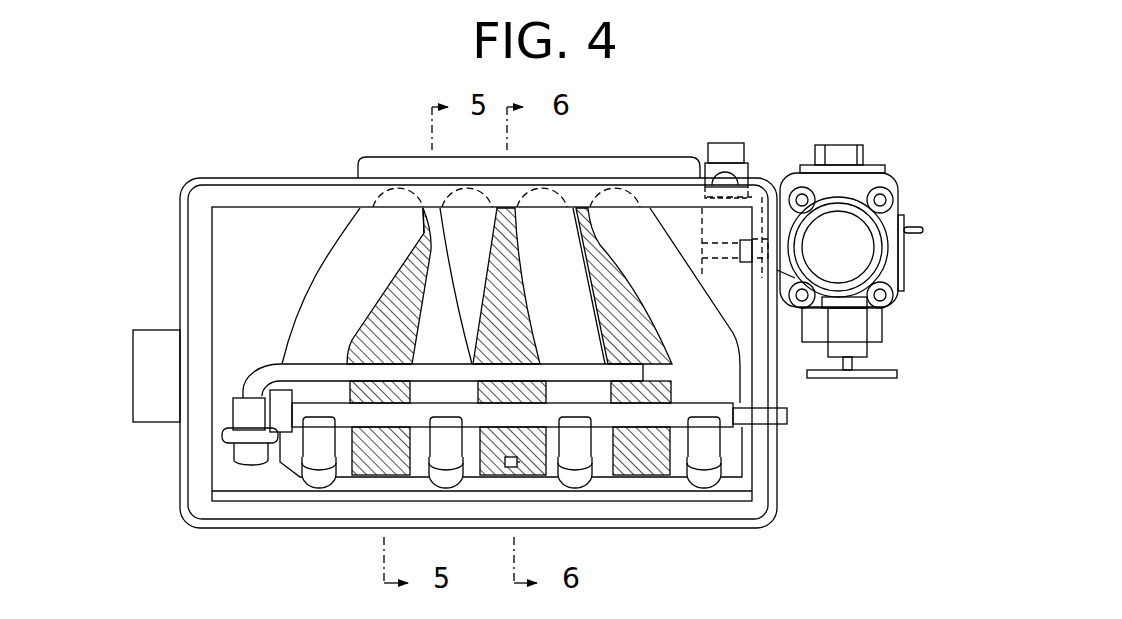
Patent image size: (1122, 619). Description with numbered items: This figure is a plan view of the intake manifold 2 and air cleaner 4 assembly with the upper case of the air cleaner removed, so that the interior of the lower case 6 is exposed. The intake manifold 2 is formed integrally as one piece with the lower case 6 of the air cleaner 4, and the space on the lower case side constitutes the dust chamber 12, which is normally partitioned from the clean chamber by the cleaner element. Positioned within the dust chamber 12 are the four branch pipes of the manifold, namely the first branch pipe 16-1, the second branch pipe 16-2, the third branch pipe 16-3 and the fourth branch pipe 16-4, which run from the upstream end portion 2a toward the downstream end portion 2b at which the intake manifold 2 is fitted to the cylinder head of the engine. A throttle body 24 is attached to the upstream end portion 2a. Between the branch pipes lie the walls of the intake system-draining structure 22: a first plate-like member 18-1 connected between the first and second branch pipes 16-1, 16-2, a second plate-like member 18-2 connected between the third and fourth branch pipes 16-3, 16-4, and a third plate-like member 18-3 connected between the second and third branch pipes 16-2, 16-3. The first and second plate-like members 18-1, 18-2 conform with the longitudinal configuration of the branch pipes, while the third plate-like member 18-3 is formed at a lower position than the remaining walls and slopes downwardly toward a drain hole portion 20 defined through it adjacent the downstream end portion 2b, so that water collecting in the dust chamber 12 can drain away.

The intake manifold 2 is at (296, 300).
The end portion 2a is at (681, 170).
The end portion 2b is at (492, 470).
The air cleaner 4 is at (178, 200).
The lower case 6 is at (215, 184).
The dust chamber 12 is at (273, 235).
The first branch pipe 16-1 is at (305, 332).
The second branch pipe 16-2 is at (424, 343).
The third branch pipe 16-3 is at (580, 353).
The fourth branch pipe 16-4 is at (710, 357).
The first plate-like member 18-1 is at (412, 253).
The second plate-like member 18-2 is at (597, 255).
The third plate-like member 18-3 is at (513, 238).
The drain hole portion 20 is at (507, 470).
The intake system-draining structure 22 is at (524, 481).
The throttle body 24 is at (852, 193).